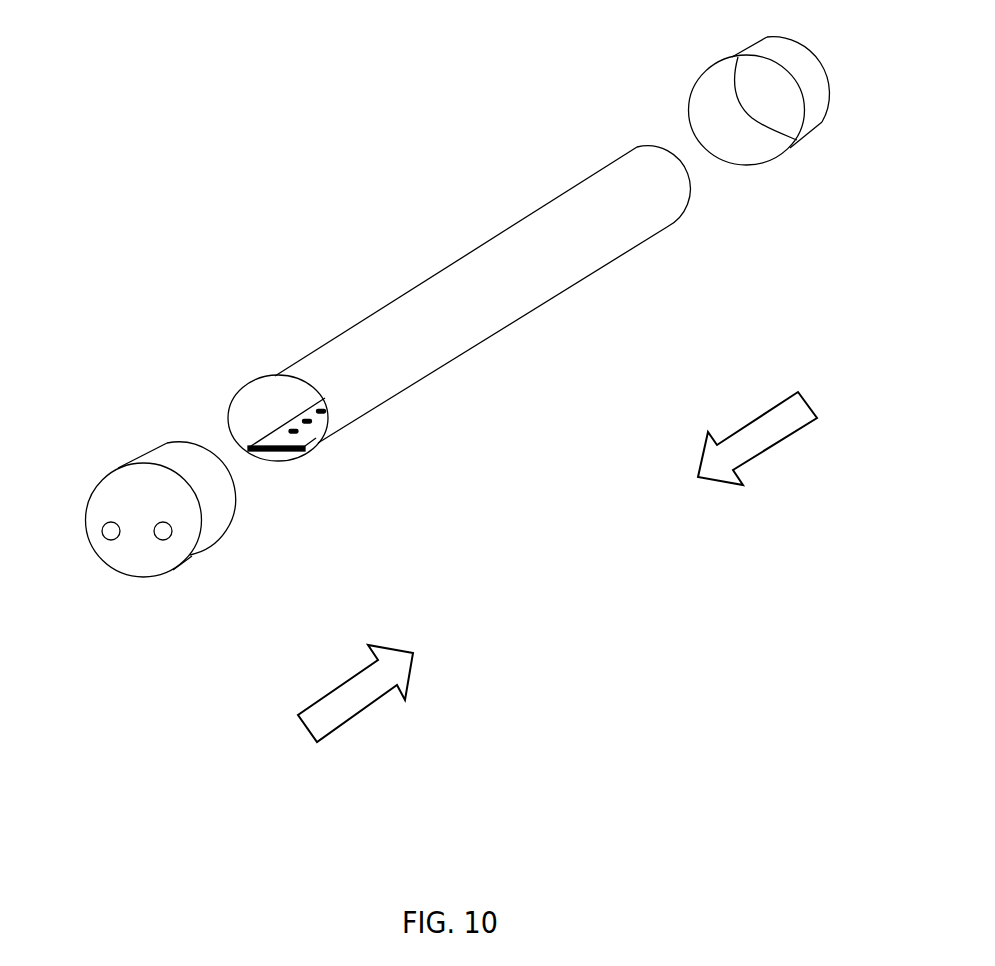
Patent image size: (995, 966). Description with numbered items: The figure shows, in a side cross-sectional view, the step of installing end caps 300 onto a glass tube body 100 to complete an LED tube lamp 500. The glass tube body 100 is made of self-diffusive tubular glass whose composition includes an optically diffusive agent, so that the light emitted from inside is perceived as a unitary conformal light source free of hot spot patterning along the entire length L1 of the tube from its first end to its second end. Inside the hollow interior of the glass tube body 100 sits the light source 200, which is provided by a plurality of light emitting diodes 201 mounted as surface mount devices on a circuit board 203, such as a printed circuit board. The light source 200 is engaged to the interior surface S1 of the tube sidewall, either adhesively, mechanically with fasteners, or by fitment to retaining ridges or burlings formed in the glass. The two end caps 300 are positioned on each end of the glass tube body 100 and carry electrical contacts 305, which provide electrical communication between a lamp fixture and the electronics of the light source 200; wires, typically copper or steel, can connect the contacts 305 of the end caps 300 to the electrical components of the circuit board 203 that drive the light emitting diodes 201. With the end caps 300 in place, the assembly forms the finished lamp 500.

The glass tube body 100 is at (583, 263).
The light source 200 is at (284, 461).
The light emitting diodes 201 is at (290, 424).
The circuit board 203 is at (297, 420).
The end caps 300 is at (168, 509).
The electrical contacts 305 is at (105, 526).
The LED tube lamp 500 is at (354, 162).
The length of the glass tube body L1 is at (655, 146).
The interior surface S1 is at (245, 427).